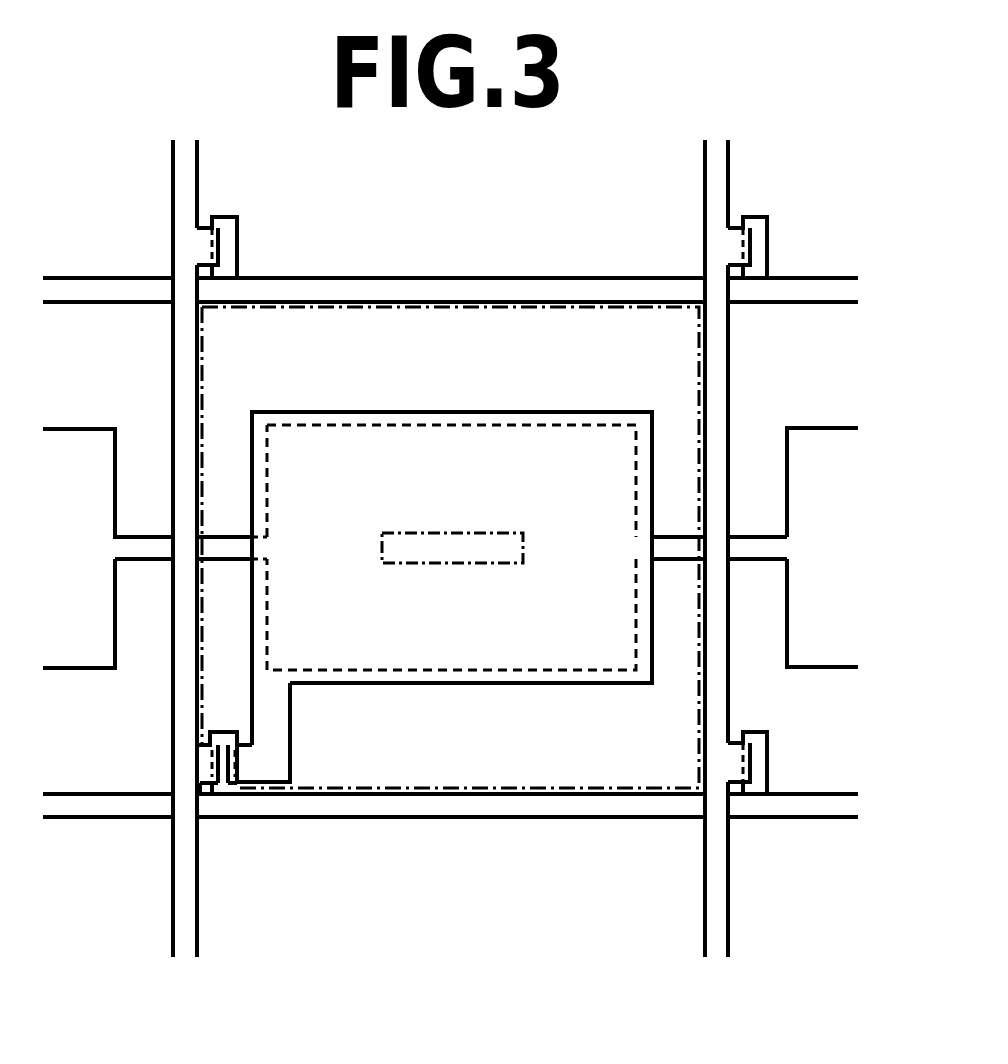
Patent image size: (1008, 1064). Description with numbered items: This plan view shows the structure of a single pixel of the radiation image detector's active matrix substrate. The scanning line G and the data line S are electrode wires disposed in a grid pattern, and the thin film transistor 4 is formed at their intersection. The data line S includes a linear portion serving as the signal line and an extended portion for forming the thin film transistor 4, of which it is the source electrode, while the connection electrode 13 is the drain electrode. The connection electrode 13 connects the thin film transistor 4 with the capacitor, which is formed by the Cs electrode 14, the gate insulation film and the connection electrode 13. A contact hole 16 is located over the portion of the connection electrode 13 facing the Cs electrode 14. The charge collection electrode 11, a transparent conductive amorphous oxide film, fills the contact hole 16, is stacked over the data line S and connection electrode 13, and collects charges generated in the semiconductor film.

The data line S is at (180, 175).
The scanning line G is at (820, 287).
The thin film transistor 4 is at (223, 798).
The charge collection electrode 11 is at (413, 308).
The connection electrode 13 is at (570, 685).
The capacitor electrode 14 is at (497, 425).
The contact hole 16 is at (493, 563).